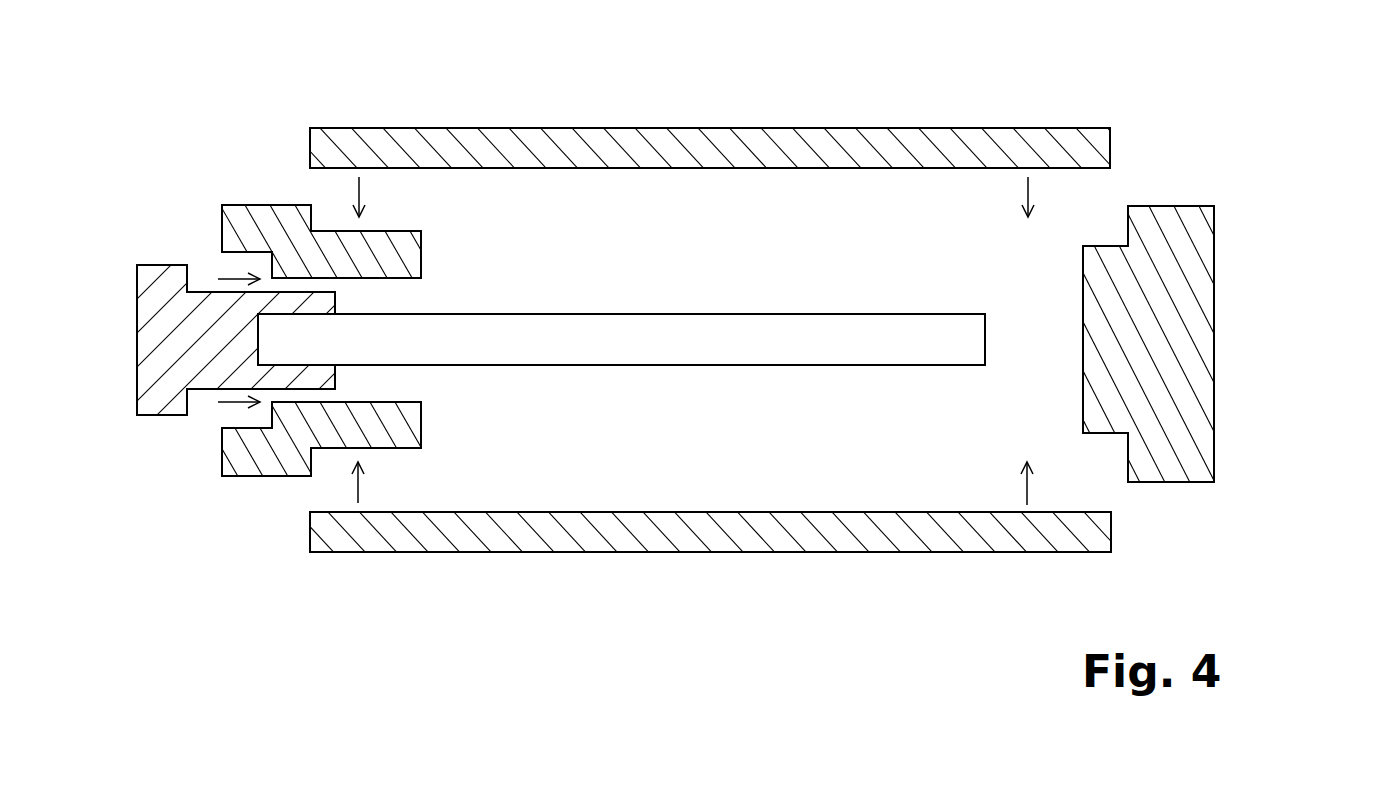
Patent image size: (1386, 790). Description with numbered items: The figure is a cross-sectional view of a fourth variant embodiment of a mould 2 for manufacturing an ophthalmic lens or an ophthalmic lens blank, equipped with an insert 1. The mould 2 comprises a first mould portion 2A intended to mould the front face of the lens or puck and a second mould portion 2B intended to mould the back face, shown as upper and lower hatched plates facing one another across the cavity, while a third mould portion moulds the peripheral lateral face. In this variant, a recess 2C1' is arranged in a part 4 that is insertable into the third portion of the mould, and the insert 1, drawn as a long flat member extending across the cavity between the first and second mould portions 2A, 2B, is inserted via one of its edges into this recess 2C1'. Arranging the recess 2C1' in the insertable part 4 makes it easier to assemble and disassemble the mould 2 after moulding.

The insert 1 is at (692, 332).
The mould 2 is at (1266, 227).
The first mould portion 2A is at (838, 140).
The second mould portion 2B is at (792, 527).
The recess 2C1' is at (317, 383).
The part insertable into the third portion 4 is at (148, 348).